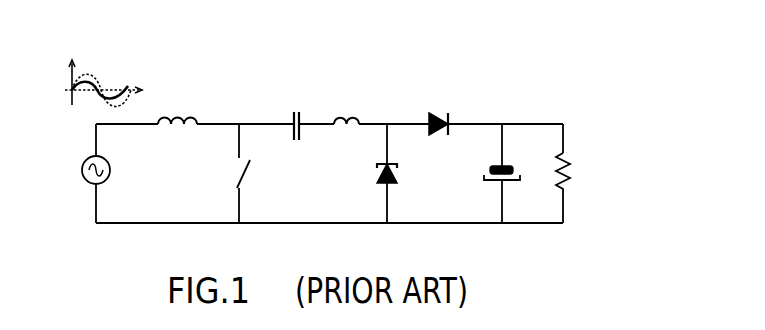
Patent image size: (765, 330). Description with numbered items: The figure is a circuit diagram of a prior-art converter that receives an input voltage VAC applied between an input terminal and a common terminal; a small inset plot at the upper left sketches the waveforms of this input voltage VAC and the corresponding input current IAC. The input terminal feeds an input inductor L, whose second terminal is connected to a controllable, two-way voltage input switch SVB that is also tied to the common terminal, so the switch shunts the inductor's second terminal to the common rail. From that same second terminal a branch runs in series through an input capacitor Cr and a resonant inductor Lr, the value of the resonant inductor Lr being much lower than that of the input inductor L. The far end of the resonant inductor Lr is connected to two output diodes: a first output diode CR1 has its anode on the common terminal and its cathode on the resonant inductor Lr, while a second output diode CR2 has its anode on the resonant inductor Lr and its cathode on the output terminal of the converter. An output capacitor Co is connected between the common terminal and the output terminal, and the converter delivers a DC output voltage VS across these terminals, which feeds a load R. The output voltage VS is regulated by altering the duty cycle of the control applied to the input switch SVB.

The input inductor L is at (177, 106).
The input switch SVB is at (259, 173).
The input capacitor Cr is at (298, 113).
The resonant inductor Lr is at (346, 105).
The first output diode CR1 is at (401, 173).
The second output diode CR2 is at (440, 114).
The output capacitor Co is at (498, 173).
The load R is at (573, 171).
The input voltage VAC is at (112, 166).
The input current IAC is at (118, 89).
The output voltage VS is at (611, 135).